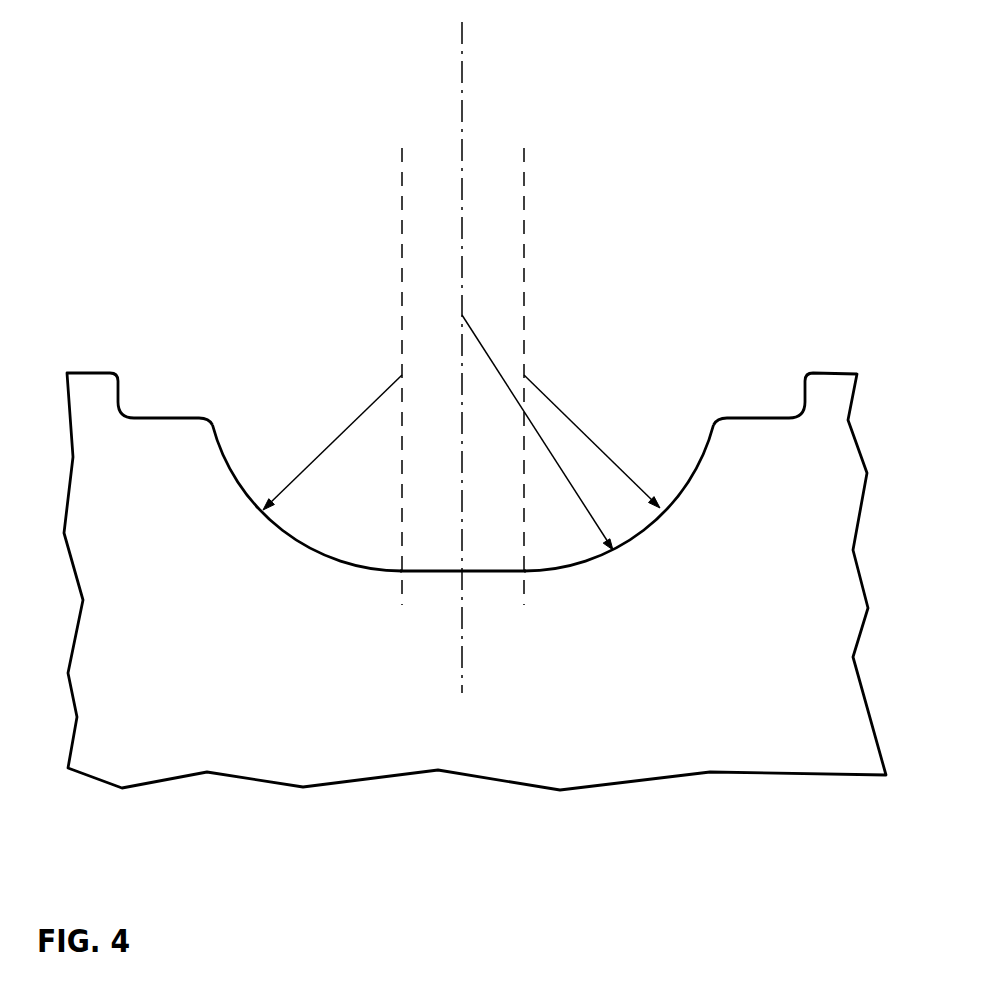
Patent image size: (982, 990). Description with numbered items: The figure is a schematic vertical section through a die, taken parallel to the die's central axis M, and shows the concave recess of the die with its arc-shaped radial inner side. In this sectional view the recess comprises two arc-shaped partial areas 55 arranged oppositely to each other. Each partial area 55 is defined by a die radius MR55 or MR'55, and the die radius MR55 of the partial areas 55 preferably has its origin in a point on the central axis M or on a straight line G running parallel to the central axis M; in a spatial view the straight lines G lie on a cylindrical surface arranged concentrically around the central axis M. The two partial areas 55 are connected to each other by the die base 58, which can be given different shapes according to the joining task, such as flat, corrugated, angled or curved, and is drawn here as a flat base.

The partial area 55 is at (253, 505).
The die base 58 is at (448, 575).
The central axis M is at (463, 33).
The straight line G is at (400, 174).
The die radius MR55 is at (345, 430).
The die radius MR'55 is at (537, 432).